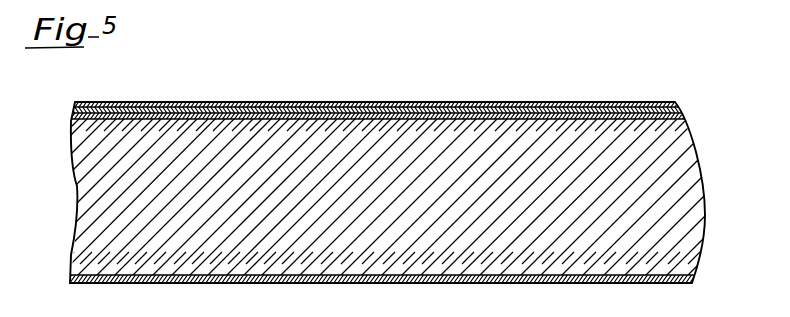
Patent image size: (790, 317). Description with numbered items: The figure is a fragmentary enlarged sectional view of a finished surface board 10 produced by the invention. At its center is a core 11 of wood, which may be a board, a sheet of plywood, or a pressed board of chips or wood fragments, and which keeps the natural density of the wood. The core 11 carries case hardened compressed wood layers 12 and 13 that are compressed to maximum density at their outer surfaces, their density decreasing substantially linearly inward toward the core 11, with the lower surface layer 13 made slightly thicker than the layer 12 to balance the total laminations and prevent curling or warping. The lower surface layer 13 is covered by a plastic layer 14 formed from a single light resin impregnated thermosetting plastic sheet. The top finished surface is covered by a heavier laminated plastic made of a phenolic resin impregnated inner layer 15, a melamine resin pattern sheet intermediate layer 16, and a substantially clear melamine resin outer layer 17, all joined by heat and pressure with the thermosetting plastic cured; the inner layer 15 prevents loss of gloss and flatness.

The laminated sheet article 10 is at (670, 92).
The core 11 is at (694, 177).
The compressed layer 12 is at (685, 117).
The lower surface layer 13 is at (694, 268).
The plastic layer 14 is at (677, 283).
The inner layer 15 is at (682, 114).
The intermediate layer 16 is at (680, 111).
The outer layer 17 is at (599, 100).